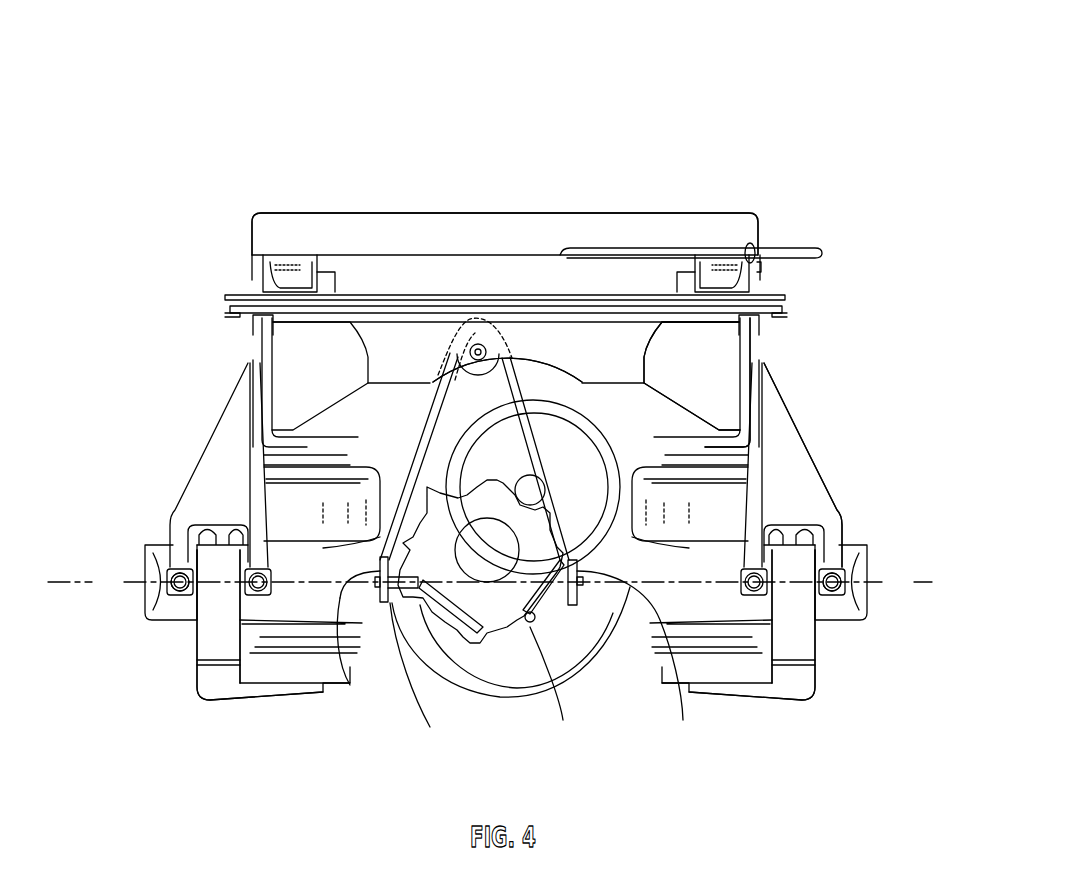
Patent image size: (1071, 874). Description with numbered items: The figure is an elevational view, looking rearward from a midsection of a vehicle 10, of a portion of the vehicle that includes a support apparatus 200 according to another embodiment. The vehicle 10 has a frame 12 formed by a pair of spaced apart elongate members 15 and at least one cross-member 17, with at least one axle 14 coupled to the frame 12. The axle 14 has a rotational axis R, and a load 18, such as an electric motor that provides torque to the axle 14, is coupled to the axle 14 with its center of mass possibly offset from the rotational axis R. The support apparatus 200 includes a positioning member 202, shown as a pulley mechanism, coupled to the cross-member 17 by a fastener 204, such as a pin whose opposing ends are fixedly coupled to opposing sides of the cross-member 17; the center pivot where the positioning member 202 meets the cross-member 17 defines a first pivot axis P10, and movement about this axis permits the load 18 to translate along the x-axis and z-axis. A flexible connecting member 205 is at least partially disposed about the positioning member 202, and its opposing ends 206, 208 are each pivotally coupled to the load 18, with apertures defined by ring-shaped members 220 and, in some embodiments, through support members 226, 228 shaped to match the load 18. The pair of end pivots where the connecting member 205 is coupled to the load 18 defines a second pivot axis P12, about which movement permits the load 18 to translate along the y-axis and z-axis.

The vehicle 10 is at (250, 104).
The support apparatus 200 is at (426, 344).
The fastener 204 is at (461, 330).
The positioning member 202 is at (484, 343).
The first pivot axis P10 is at (486, 350).
The cross-member 17 is at (641, 340).
The frame 12 is at (757, 329).
The elongate member 15 is at (760, 353).
The flexible connecting member 205 is at (527, 393).
The load 18 is at (426, 531).
The ring-shaped member 220 is at (384, 606).
The support member 226 is at (430, 638).
The support member 228 is at (535, 625).
The end of connecting member 208 is at (660, 630).
The end of connecting member 206 is at (350, 686).
The axle 14 is at (710, 605).
The rotational axis R is at (490, 582).
The second pivot axis P12 is at (503, 582).